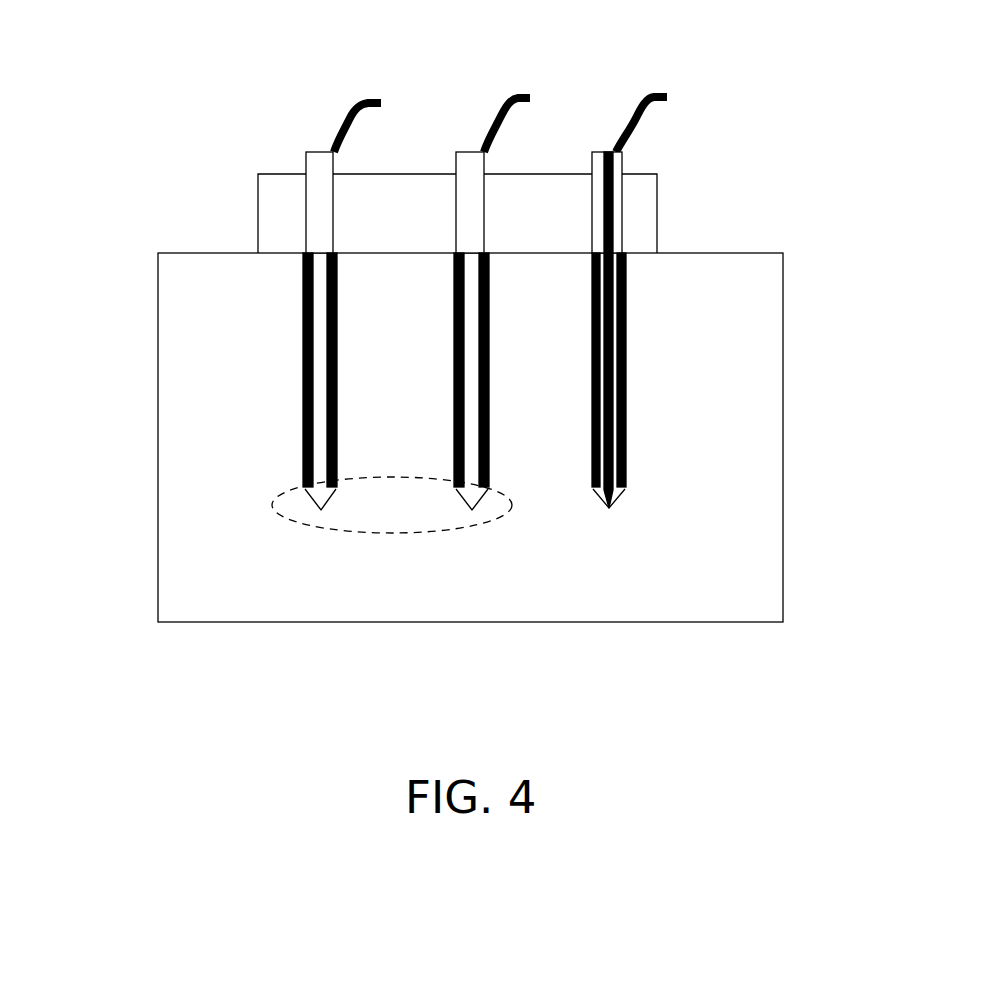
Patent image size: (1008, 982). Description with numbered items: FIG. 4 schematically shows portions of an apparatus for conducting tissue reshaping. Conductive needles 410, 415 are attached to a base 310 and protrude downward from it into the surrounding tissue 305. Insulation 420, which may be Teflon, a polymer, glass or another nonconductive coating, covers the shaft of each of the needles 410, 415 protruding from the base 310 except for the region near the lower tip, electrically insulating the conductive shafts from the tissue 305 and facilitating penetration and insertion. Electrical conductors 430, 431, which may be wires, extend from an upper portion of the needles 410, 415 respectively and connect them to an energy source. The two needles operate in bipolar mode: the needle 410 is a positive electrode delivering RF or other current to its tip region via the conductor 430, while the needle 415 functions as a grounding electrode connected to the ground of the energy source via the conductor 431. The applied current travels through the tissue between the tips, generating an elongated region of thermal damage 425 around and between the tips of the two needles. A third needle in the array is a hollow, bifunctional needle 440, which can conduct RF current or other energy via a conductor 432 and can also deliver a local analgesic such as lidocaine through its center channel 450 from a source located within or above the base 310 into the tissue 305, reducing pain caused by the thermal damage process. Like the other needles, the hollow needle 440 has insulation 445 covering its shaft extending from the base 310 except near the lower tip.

The tissue 305 is at (233, 582).
The base 310 is at (281, 201).
The conductive needle 410 is at (317, 284).
The conductive needle 415 is at (470, 330).
The insulation 420 is at (455, 400).
The region of thermal damage 425 is at (392, 523).
The electrical conductor 430 is at (348, 108).
The electrical conductor 431 is at (502, 92).
The conductor 432 is at (640, 97).
The hollow needle 440 is at (633, 502).
The insulation 445 is at (625, 400).
The center channel 450 is at (612, 207).